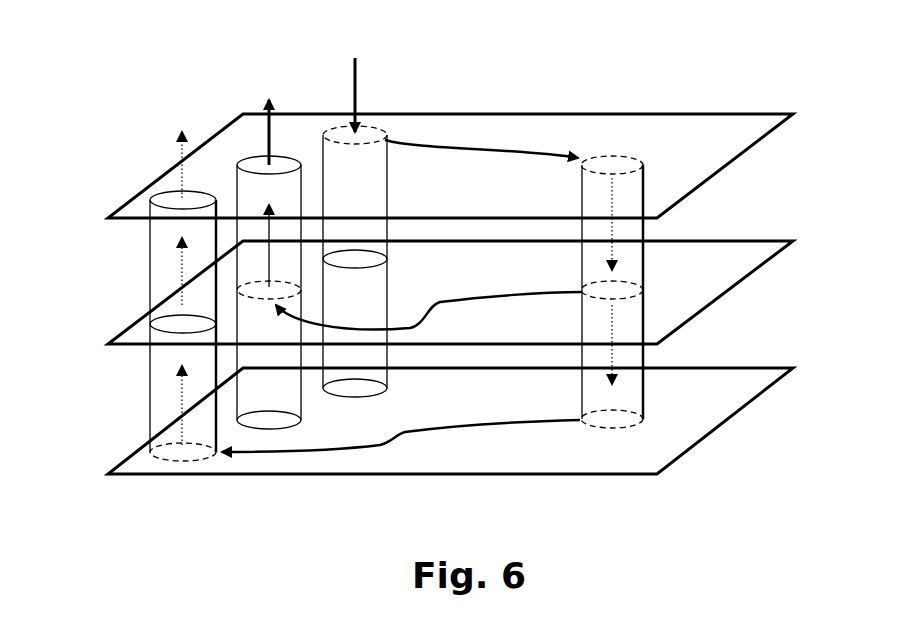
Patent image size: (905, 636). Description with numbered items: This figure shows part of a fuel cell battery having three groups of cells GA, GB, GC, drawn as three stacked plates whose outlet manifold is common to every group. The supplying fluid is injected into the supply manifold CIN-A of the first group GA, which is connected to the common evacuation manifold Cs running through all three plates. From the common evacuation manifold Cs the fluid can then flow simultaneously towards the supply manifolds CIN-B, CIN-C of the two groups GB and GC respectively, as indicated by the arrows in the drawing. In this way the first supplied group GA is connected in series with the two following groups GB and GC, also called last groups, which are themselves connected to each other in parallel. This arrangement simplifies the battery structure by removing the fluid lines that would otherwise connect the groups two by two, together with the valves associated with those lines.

The first group of cells GA is at (793, 114).
The second group of cells GB is at (793, 241).
The third group of cells GC is at (793, 368).
The common evacuation manifold Cs is at (647, 258).
The supply manifold of the first group CIN-A is at (323, 135).
The supply manifold of the second group CIN-B is at (240, 290).
The supply manifold of the third group CIN-C is at (150, 452).